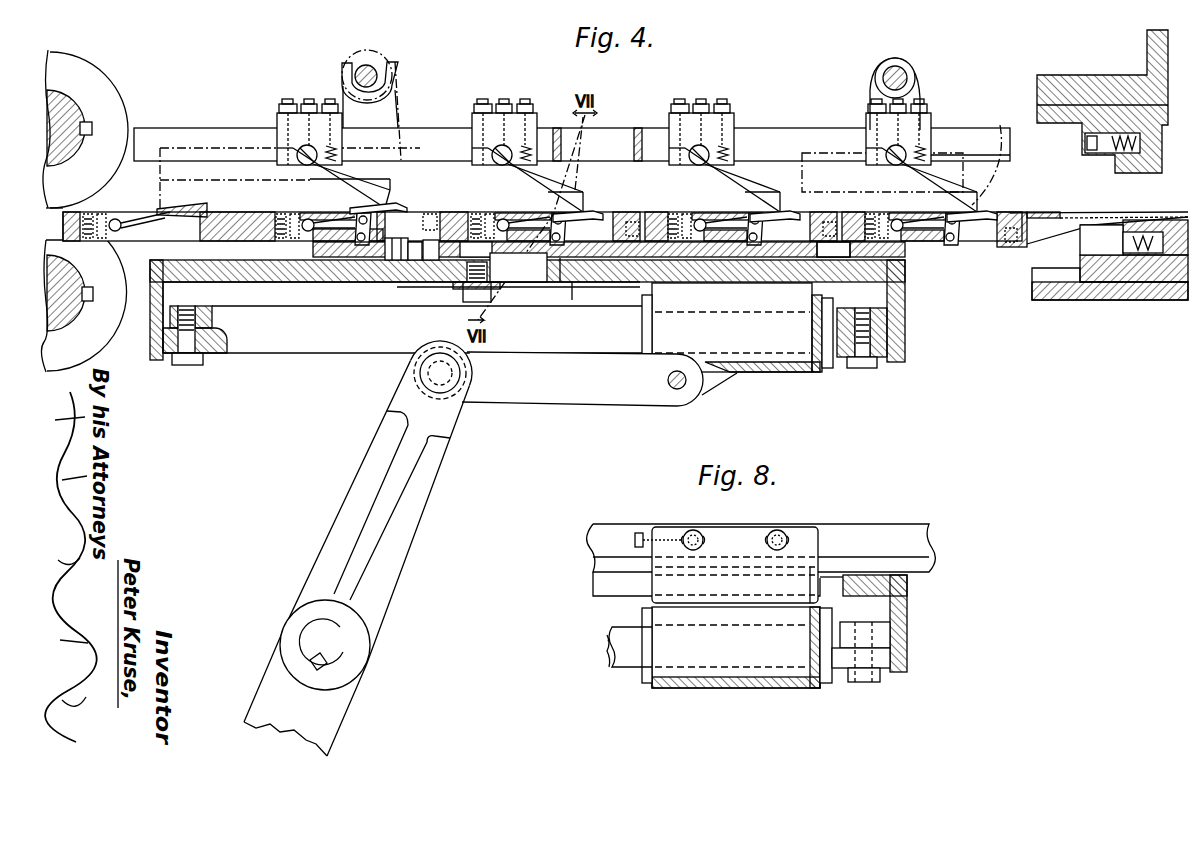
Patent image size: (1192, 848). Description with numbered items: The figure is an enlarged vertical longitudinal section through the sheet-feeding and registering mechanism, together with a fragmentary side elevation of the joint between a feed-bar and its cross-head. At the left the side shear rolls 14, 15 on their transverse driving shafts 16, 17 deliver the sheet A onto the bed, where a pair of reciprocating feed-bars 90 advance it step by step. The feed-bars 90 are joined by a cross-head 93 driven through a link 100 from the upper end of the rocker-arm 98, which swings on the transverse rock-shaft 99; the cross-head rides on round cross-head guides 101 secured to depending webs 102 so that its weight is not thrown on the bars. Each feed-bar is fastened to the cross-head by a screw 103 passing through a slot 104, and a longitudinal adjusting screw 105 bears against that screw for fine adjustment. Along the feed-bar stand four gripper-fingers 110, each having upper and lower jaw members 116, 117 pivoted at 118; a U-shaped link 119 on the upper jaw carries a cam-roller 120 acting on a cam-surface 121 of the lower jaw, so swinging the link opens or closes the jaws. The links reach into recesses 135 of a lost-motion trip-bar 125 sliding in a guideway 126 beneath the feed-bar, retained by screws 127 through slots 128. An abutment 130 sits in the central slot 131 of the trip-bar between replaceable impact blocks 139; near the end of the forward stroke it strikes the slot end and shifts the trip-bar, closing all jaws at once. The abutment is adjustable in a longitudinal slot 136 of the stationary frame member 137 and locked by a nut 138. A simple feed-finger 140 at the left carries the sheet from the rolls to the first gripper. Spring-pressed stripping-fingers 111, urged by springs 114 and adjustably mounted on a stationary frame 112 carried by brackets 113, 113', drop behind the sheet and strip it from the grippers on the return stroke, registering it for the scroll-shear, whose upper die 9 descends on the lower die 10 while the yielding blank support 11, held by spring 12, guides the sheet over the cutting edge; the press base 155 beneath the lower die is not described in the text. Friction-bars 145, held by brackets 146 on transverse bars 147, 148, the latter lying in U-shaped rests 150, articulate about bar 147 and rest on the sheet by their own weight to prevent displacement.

In FIG. 4, the upper die 9 is at (1109, 101).
In FIG. 4, the lower die 10 is at (1150, 212).
In FIG. 4, the yielding blank support 11 is at (1124, 210).
In FIG. 4, the spring 12 is at (1121, 240).
In FIG. 4, the side shear roll 14 is at (108, 76).
In FIG. 4, the side shear roll 15 is at (62, 280).
In FIG. 4, the transverse driving shaft 16 is at (66, 96).
In FIG. 4, the transverse driving shaft 17 is at (86, 322).
In FIG. 4, the feed-bar 90 is at (255, 210).
In FIG. 8, the feed-bar 90 is at (852, 534).
In FIG. 4, the cross-head 93 is at (762, 372).
In FIG. 8, the cross-head 93 is at (803, 536).
In FIG. 4, the rocker-arm 98 is at (408, 560).
In FIG. 4, the transverse rock-shaft 99 is at (338, 643).
In FIG. 4, the link 100 is at (577, 379).
In FIG. 4, the cross-head guide 101 is at (403, 329).
In FIG. 8, the cross-head guide 101 is at (630, 660).
In FIG. 4, the depending web 102 is at (158, 352).
In FIG. 8, the depending web 102 is at (898, 642).
In FIG. 8, the screw 103 is at (697, 530).
In FIG. 8, the slot 104 is at (773, 530).
In FIG. 8, the longitudinal adjusting screw 105 is at (642, 532).
In FIG. 4, the gripper-finger 110 is at (352, 209).
In FIG. 4, the stripping-finger 111 is at (540, 172).
In FIG. 4, the stationary frame 112 is at (754, 127).
In FIG. 4, the frame bracket 113 is at (900, 63).
In FIG. 4, the frame bracket 113' is at (383, 38).
In FIG. 4, the spring 114 is at (540, 137).
In FIG. 4, the upper jaw member 116 is at (542, 214).
In FIG. 4, the lower jaw member 117 is at (505, 221).
In FIG. 4, the pivot 118 is at (470, 212).
In FIG. 4, the U-shaped link 119 is at (760, 211).
In FIG. 4, the cam-roller 120 is at (518, 267).
In FIG. 4, the cam-surface 121 is at (578, 192).
In FIG. 4, the lost-motion trip-bar 125 is at (918, 258).
In FIG. 8, the lost-motion trip-bar 125 is at (912, 570).
In FIG. 4, the guideway 126 is at (236, 241).
In FIG. 4, the screw 127 is at (422, 262).
In FIG. 4, the slot 128 is at (362, 262).
In FIG. 4, the abutment 130 is at (492, 286).
In FIG. 4, the slot 131 is at (563, 262).
In FIG. 4, the recess 135 is at (572, 300).
In FIG. 4, the longitudinal slot 136 is at (443, 274).
In FIG. 4, the stationary frame member 137 is at (396, 262).
In FIG. 4, the nut 138 is at (490, 304).
In FIG. 4, the impact block 139 is at (706, 283).
In FIG. 4, the feed-finger 140 is at (180, 208).
In FIG. 4, the friction-bar 145 is at (226, 148).
In FIG. 4, the bracket 146 is at (932, 84).
In FIG. 4, the transverse supporting bar 147 is at (905, 74).
In FIG. 4, the transverse supporting bar 148 is at (358, 66).
In FIG. 4, the U-shaped rest 150 is at (392, 62).
In FIG. 4, the base 155 is at (1055, 300).
In FIG. 4, the sheet A is at (1062, 212).